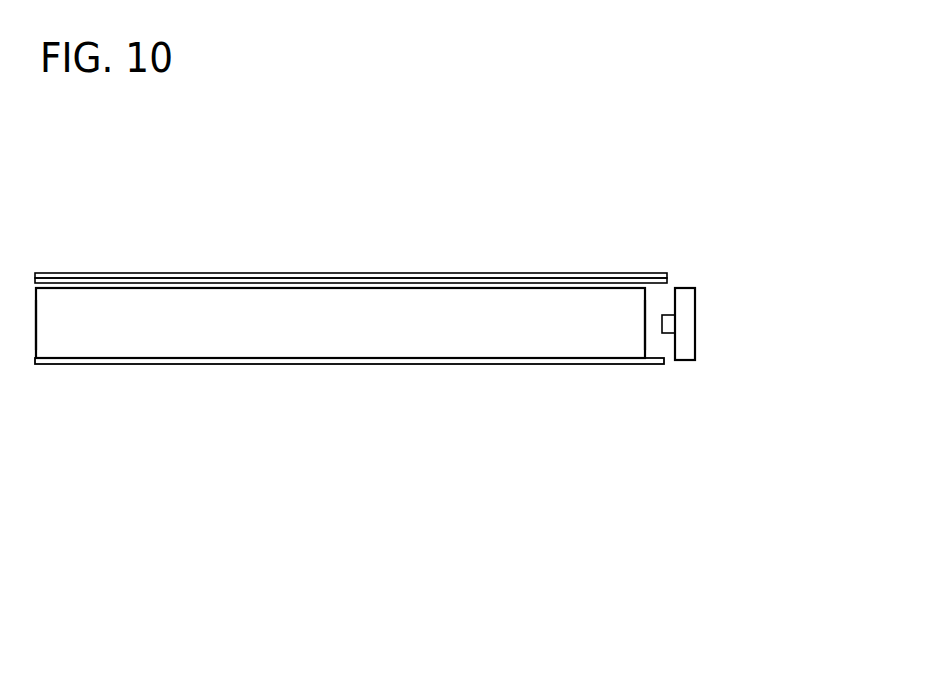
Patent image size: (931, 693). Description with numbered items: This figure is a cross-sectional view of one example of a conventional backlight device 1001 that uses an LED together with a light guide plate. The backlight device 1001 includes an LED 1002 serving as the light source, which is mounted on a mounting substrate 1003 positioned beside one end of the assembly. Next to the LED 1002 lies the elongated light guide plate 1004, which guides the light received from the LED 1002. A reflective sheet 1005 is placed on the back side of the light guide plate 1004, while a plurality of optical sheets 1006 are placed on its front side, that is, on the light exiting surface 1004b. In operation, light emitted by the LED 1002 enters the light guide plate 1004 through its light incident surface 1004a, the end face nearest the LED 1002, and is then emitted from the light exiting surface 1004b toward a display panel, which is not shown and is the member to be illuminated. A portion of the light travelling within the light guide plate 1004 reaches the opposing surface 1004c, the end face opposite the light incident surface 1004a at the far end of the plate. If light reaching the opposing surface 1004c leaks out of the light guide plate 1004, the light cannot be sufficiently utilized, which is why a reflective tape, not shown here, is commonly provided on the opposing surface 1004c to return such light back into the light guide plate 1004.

The backlight device 1001 is at (768, 145).
The LED 1002 is at (669, 326).
The mounting substrate 1003 is at (686, 323).
The light guide plate 1004 is at (487, 327).
The light incident surface 1004a is at (645, 329).
The light exiting surface 1004b is at (391, 283).
The opposing surface 1004c is at (37, 325).
The reflective sheet 1005 is at (254, 364).
The optical sheets 1006 is at (668, 273).